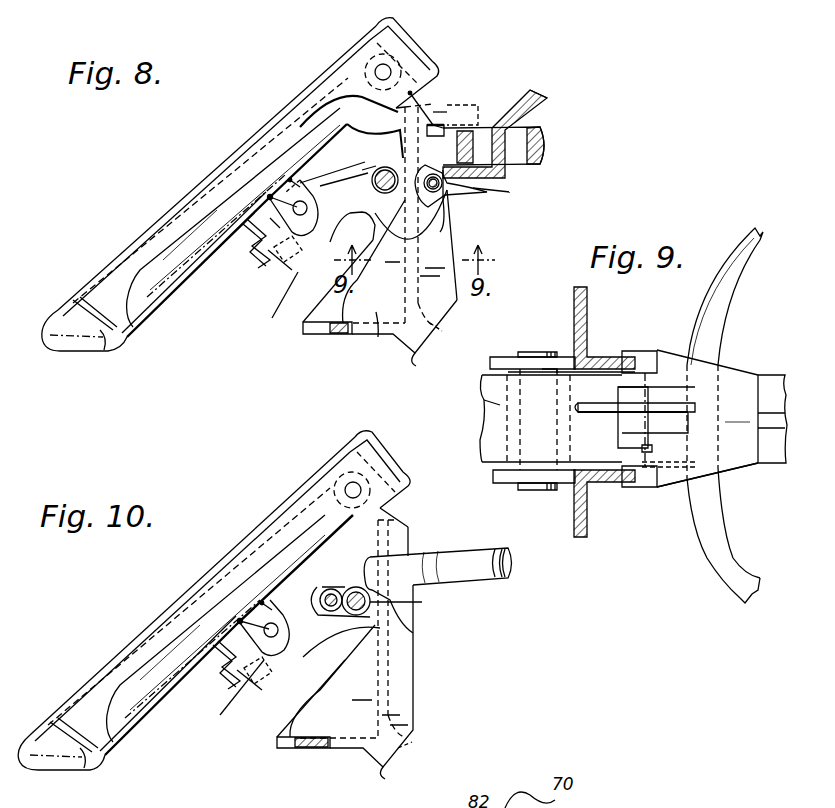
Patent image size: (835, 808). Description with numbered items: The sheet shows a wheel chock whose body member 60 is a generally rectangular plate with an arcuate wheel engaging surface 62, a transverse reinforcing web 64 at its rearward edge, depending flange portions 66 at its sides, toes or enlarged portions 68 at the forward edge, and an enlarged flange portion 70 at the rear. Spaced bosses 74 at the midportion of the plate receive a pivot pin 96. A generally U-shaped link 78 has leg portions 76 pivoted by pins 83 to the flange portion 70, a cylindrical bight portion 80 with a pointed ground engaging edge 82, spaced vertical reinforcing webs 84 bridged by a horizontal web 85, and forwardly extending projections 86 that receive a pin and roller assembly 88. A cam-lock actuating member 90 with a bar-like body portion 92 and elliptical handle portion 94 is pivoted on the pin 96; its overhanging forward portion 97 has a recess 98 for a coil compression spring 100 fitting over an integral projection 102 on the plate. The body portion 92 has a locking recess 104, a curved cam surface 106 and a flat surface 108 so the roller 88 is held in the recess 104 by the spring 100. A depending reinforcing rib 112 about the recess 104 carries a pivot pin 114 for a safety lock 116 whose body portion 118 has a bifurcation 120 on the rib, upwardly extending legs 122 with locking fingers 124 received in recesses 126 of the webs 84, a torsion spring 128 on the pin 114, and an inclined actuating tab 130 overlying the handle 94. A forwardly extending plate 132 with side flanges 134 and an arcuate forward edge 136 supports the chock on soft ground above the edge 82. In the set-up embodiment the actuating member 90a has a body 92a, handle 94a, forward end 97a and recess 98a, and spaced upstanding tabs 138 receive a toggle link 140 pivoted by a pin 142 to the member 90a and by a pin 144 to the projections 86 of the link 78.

In FIG. 8, the body member 60 is at (91, 279).
In FIG. 10, the body member 60 is at (62, 698).
In FIG. 8, the wheel engaging surface 62 is at (208, 185).
In FIG. 10, the wheel engaging surface 62 is at (170, 610).
In FIG. 8, the transverse reinforcing web 64 is at (412, 92).
In FIG. 10, the transverse reinforcing web 64 is at (387, 492).
In FIG. 8, the depending flange portions 66 is at (167, 237).
In FIG. 10, the depending flange portions 66 is at (138, 652).
In FIG. 8, the enlarged portions 68 is at (105, 350).
In FIG. 10, the enlarged portions 68 is at (62, 752).
In FIG. 8, the enlarged flange portion 70 is at (393, 43).
In FIG. 10, the enlarged flange portion 70 is at (365, 462).
In FIG. 8, the spaced bosses 74 is at (283, 171).
In FIG. 10, the spaced bosses 74 is at (254, 593).
In FIG. 8, the leg portion 76 is at (417, 100).
In FIG. 10, the leg portion 76 is at (397, 503).
In FIG. 8, the U-shaped link 78 is at (462, 306).
In FIG. 10, the U-shaped link 78 is at (422, 694).
In FIG. 8, the bight portion 80 is at (447, 333).
In FIG. 10, the bight portion 80 is at (422, 751).
In FIG. 8, the pointed edge 82 is at (425, 364).
In FIG. 10, the pointed edge 82 is at (397, 781).
In FIG. 8, the pins 83 is at (377, 68).
In FIG. 10, the pins 83 is at (348, 487).
In FIG. 8, the vertical reinforcing webs 84 is at (445, 232).
In FIG. 9, the vertical reinforcing webs 84 is at (598, 357).
In FIG. 10, the vertical reinforcing webs 84 is at (403, 619).
In FIG. 8, the horizontal web 85 is at (440, 94).
In FIG. 10, the horizontal web 85 is at (404, 521).
In FIG. 8, the forwardly extending projection 86 is at (380, 168).
In FIG. 9, the forwardly extending projection 86 is at (504, 357).
In FIG. 10, the forwardly extending projection 86 is at (355, 586).
In FIG. 8, the pin and roller assembly 88 is at (372, 190).
In FIG. 9, the pin and roller assembly 88 is at (540, 491).
In FIG. 8, the cam-lock actuating member 90 is at (352, 252).
In FIG. 9, the cam-lock actuating member 90 is at (479, 441).
In FIG. 10, the actuating member 90a is at (312, 661).
In FIG. 8, the bar-like body portion 92 is at (297, 214).
In FIG. 10, the body 92a is at (300, 680).
In FIG. 8, the handle portion 94 is at (548, 146).
In FIG. 9, the handle portion 94 is at (715, 315).
In FIG. 10, the handle 94a is at (495, 572).
In FIG. 8, the pivot pin 96 is at (266, 198).
In FIG. 10, the pivot pin 96 is at (238, 620).
In FIG. 8, the overhanging forward portion 97 is at (277, 301).
In FIG. 10, the forward end 97a is at (235, 698).
In FIG. 8, the recess 98 is at (280, 270).
In FIG. 10, the recess 98a is at (265, 700).
In FIG. 8, the coil compression spring 100 is at (252, 265).
In FIG. 10, the coil compression spring 100 is at (230, 682).
In FIG. 8, the integral projection 102 is at (247, 252).
In FIG. 10, the integral projection 102 is at (222, 672).
In FIG. 8, the locking recess 104 is at (388, 216).
In FIG. 8, the curved cam surface 106 is at (350, 138).
In FIG. 8, the flat surface 108 is at (334, 172).
In FIG. 8, the depending reinforcing rib 112 is at (372, 262).
In FIG. 9, the depending reinforcing rib 112 is at (497, 405).
In FIG. 8, the pivot pin 114 is at (447, 188).
In FIG. 9, the pivot pin 114 is at (656, 449).
In FIG. 8, the safety lock 116 is at (512, 176).
In FIG. 9, the safety lock 116 is at (742, 475).
In FIG. 8, the body portion 118 is at (473, 188).
In FIG. 9, the body portion 118 is at (740, 419).
In FIG. 8, the bifurcation 120 is at (445, 205).
In FIG. 9, the bifurcation 120 is at (620, 414).
In FIG. 8, the upwardly extending legs 122 is at (478, 116).
In FIG. 8, the locking fingers 124 is at (453, 121).
In FIG. 9, the locking fingers 124 is at (643, 351).
In FIG. 8, the recesses 126 is at (445, 118).
In FIG. 8, the torsion spring 128 is at (432, 174).
In FIG. 9, the torsion spring 128 is at (618, 400).
In FIG. 8, the inclined actuating tab 130 is at (547, 98).
In FIG. 9, the inclined actuating tab 130 is at (773, 383).
In FIG. 8, the forwardly extending plate 132 is at (341, 335).
In FIG. 10, the forwardly extending plate 132 is at (325, 748).
In FIG. 8, the side flanges 134 is at (378, 337).
In FIG. 10, the side flanges 134 is at (347, 703).
In FIG. 8, the arcuate forward edge 136 is at (318, 334).
In FIG. 10, the arcuate forward edge 136 is at (295, 748).
In FIG. 10, the upstanding tabs 138 is at (325, 602).
In FIG. 10, the toggle link 140 is at (336, 589).
In FIG. 10, the pivot pin 142 is at (330, 593).
In FIG. 10, the pivot pin 144 is at (412, 602).